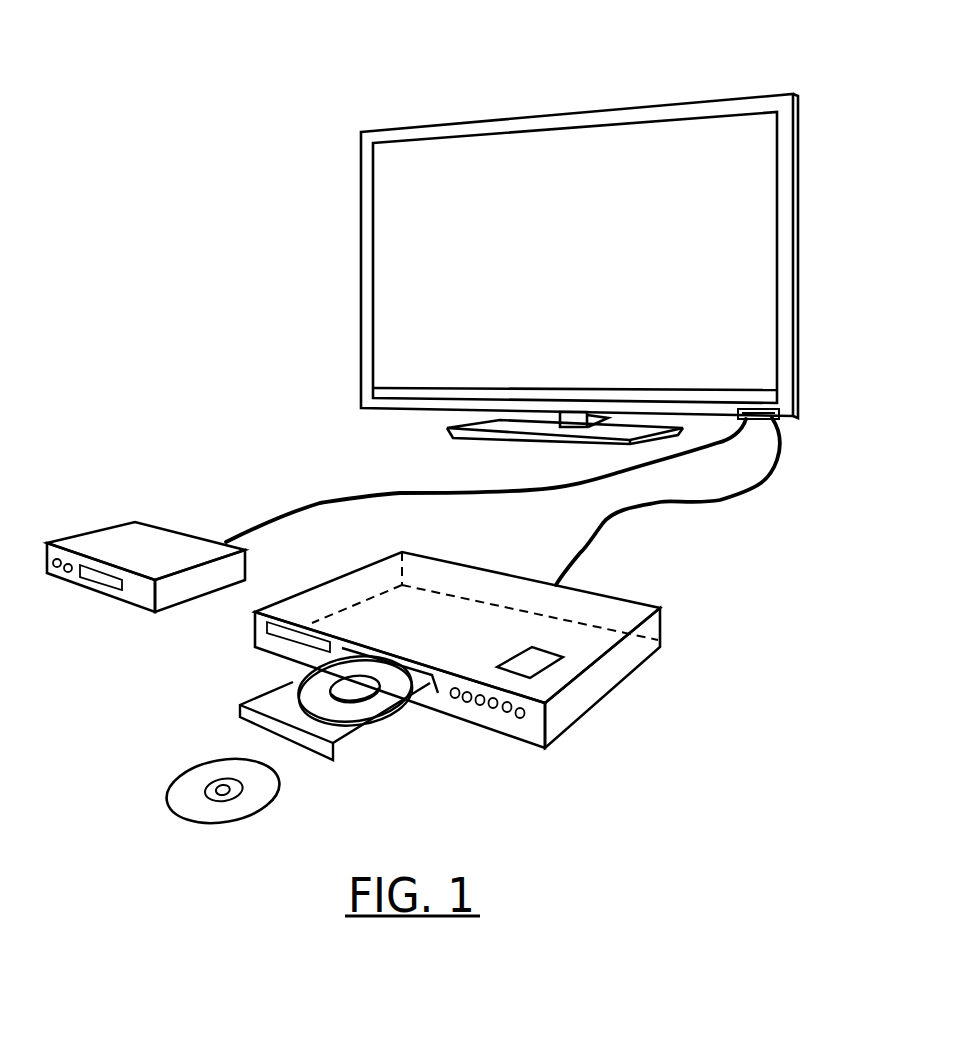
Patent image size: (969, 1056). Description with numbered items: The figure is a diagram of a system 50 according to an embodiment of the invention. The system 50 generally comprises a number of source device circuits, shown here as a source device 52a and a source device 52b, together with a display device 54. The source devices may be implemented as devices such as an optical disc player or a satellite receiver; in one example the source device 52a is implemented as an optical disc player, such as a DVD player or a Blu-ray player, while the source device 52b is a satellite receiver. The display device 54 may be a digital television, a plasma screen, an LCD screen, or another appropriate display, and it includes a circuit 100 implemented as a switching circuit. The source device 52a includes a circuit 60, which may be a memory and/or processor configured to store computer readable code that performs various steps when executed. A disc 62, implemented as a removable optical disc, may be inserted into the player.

The system 50 is at (295, 46).
The display device 54 is at (562, 113).
The switching circuit 100 is at (781, 412).
The source device 52b is at (98, 530).
The source device 52a is at (483, 572).
The memory and/or processor circuit 60 is at (507, 663).
The disc 62 is at (188, 772).